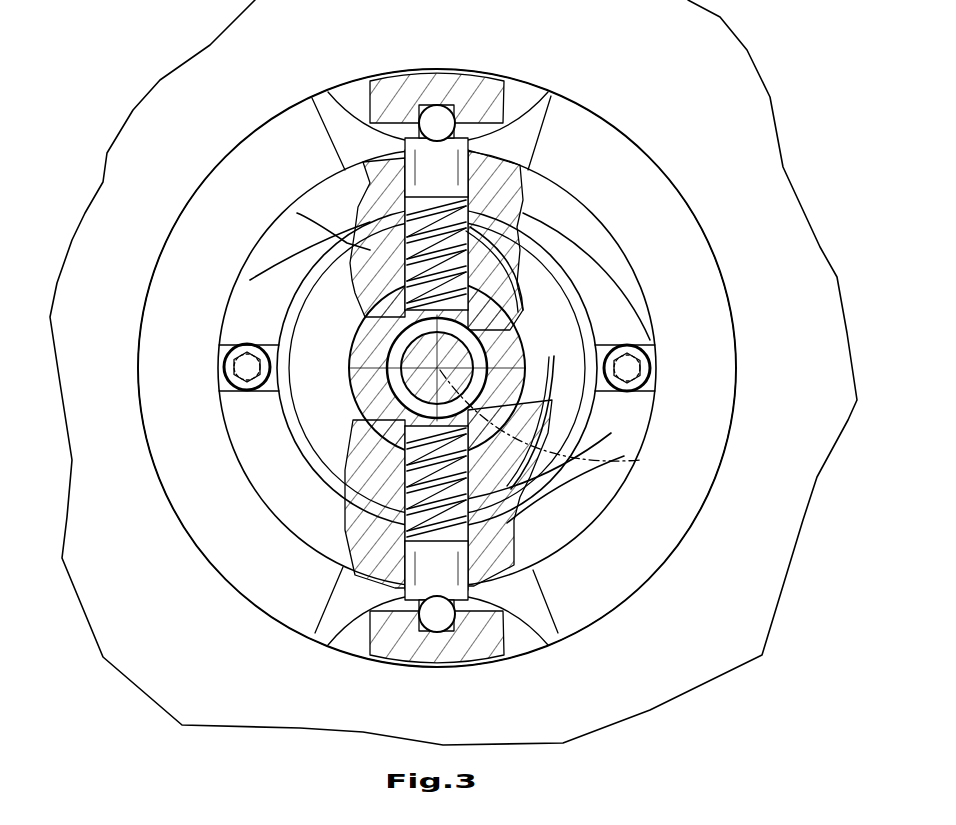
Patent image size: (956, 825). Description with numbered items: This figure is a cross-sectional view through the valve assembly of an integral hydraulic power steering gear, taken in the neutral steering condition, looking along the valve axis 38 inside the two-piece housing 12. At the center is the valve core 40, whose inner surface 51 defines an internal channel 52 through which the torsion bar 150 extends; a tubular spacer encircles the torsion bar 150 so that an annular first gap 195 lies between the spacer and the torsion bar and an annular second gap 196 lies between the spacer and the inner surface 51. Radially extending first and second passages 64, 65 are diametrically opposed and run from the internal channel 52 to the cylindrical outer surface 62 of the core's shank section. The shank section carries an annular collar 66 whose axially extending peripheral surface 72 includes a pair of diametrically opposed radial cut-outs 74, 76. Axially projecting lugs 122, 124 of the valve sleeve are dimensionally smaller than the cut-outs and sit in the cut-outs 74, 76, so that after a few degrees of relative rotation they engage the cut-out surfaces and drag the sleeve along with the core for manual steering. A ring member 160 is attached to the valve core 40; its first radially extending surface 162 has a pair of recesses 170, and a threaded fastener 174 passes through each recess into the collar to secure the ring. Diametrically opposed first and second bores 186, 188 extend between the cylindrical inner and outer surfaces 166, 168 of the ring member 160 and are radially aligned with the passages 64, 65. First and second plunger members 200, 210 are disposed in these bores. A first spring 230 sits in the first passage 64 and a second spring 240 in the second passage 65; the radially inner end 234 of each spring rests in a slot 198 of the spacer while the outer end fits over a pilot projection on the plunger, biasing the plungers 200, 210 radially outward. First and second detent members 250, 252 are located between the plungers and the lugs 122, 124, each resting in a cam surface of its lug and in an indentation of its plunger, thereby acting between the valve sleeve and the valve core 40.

The housing 12 is at (257, 50).
The valve axis 38 is at (636, 459).
The valve core 40 is at (540, 240).
The inner surface 51 is at (500, 305).
The internal channel 52 is at (520, 280).
The cylindrical outer surface 62 is at (595, 420).
The first passage 64 is at (520, 335).
The second passage 65 is at (524, 503).
The annular collar 66 is at (736, 430).
The peripheral surface 72 is at (738, 338).
The first radial cut-out 74 is at (538, 86).
The second radial cut-out 76 is at (546, 656).
The first lug 122 is at (403, 93).
The second lug 124 is at (362, 653).
The torsion bar 150 is at (330, 458).
The ring member 160 is at (280, 195).
The first radially extending surface 162 is at (278, 147).
The cylindrical inner surface 166 is at (300, 500).
The cylindrical outer surface 168 is at (237, 457).
The recesses 170 is at (222, 343).
The threaded fastener 174 is at (247, 367).
The first bore 186 is at (328, 92).
The second bore 188 is at (506, 652).
The first gap 195 is at (240, 417).
The second gap 196 is at (347, 340).
The slot 198 is at (303, 490).
The first plunger member 200 is at (460, 158).
The second plunger member 210 is at (355, 605).
The first spring 230 is at (297, 213).
The radially inner end 234 is at (545, 470).
The second spring 240 is at (500, 580).
The first detent member 250 is at (437, 123).
The second detent member 252 is at (437, 618).